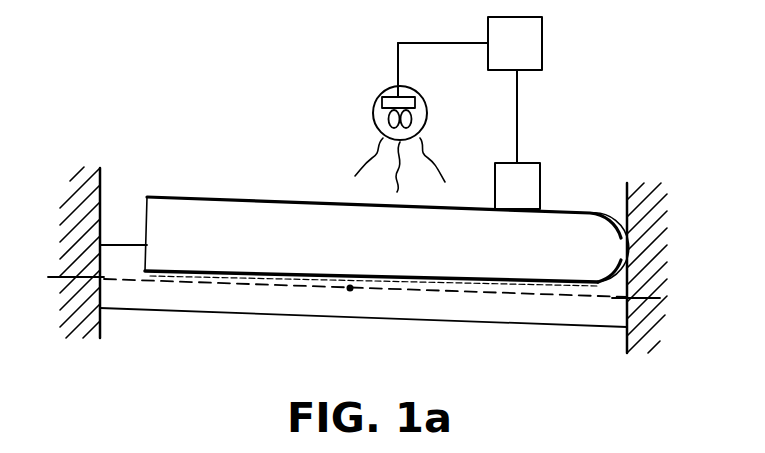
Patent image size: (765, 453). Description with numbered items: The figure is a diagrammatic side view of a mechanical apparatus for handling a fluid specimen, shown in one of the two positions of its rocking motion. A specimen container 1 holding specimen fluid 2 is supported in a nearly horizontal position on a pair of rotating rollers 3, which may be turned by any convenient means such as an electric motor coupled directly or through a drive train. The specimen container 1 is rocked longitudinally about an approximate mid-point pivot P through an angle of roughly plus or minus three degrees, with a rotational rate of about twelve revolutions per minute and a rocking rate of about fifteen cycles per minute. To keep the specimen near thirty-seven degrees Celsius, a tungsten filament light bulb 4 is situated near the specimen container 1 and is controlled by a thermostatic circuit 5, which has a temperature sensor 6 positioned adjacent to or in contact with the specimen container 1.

The specimen container 1 is at (203, 197).
The specimen fluid 2 is at (562, 270).
The rotating rollers 3 is at (197, 298).
The mid-point pivot P is at (365, 297).
The tungsten filament light bulb 4 is at (377, 101).
The thermostatic circuit 5 is at (530, 32).
The temperature sensor 6 is at (495, 179).